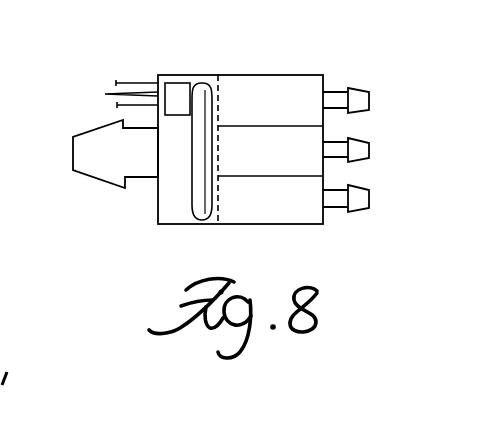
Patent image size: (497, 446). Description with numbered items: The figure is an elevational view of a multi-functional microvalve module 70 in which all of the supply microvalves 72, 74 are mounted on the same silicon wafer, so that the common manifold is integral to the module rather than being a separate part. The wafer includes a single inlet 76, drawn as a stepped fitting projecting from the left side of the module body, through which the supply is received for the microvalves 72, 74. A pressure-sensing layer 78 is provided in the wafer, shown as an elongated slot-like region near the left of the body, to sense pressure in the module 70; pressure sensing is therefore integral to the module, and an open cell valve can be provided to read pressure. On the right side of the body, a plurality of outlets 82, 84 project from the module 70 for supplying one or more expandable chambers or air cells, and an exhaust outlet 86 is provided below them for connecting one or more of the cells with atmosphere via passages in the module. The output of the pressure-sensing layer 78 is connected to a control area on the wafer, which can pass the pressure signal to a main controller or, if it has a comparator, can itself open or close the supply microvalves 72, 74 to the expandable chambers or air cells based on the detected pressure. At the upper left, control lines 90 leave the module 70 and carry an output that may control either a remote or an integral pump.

The multi-functional microvalve module 70 is at (181, 232).
The supply microvalve 72 is at (291, 83).
The supply microvalve 74 is at (315, 137).
The inlet 76 is at (108, 178).
The pressure-sensing layer 78 is at (202, 187).
The outlet 82 is at (358, 92).
The outlet 84 is at (355, 148).
The exhaust outlet 86 is at (355, 200).
The control lines 90 is at (98, 102).